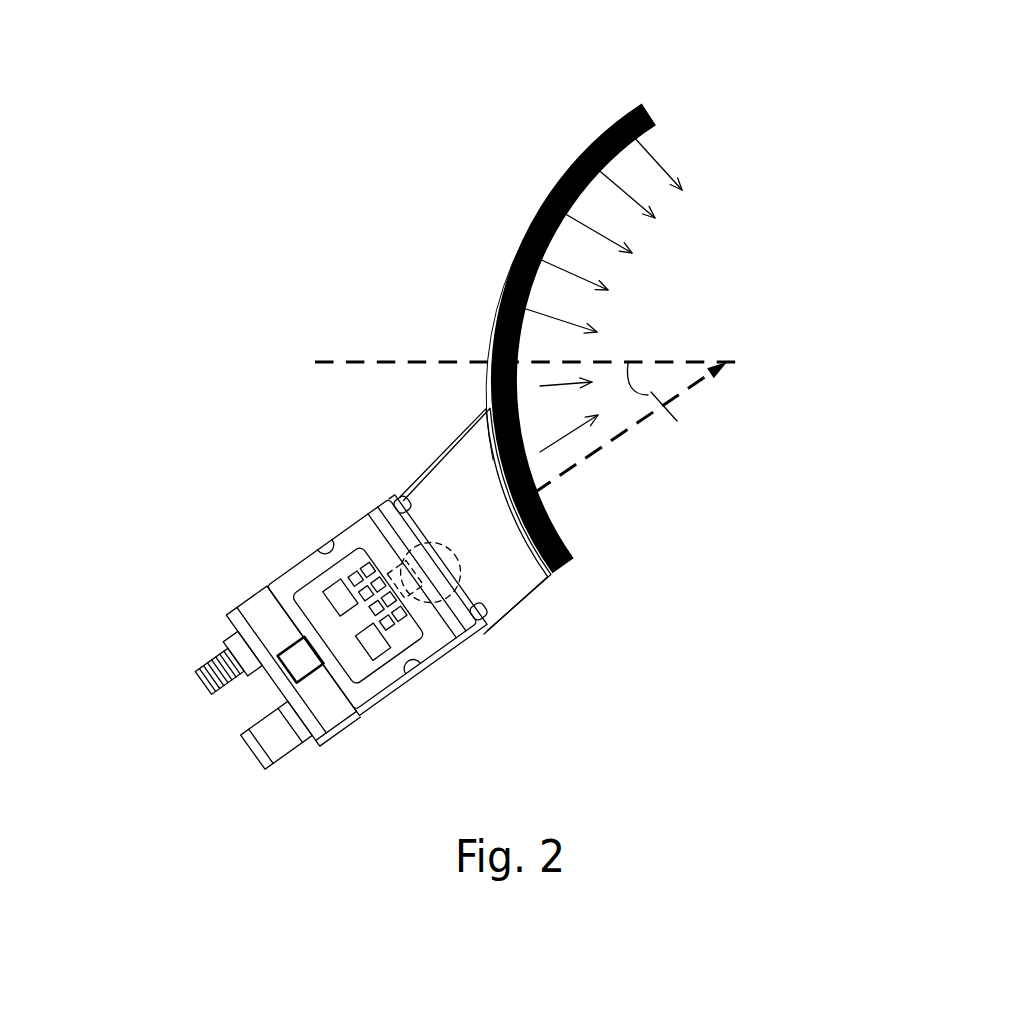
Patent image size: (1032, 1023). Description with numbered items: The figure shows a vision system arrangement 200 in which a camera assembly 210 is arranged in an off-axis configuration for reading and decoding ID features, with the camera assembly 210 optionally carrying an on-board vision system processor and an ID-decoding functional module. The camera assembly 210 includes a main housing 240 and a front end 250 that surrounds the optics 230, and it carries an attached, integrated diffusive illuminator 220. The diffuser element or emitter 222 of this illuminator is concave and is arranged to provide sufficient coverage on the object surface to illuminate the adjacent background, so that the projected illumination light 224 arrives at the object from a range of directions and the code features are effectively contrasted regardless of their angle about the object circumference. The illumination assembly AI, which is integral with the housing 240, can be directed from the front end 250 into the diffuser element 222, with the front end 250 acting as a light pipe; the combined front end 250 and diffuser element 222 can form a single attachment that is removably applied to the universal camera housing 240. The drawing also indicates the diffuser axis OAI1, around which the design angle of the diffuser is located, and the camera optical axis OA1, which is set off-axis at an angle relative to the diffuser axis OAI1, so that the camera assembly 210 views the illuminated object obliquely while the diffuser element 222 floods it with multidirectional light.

The vision system arrangement 200 is at (502, 86).
The camera assembly 210 is at (437, 682).
The diffusive illuminator 220 is at (507, 250).
The diffuser element 222 is at (573, 158).
The projected illumination light 224 is at (641, 200).
The optics 230 is at (432, 580).
The main housing 240 is at (351, 736).
The front end 250 is at (551, 605).
The illumination assembly AI is at (395, 494).
The diffuser axis OAI1 is at (357, 358).
The camera optical axis OA1 is at (567, 475).